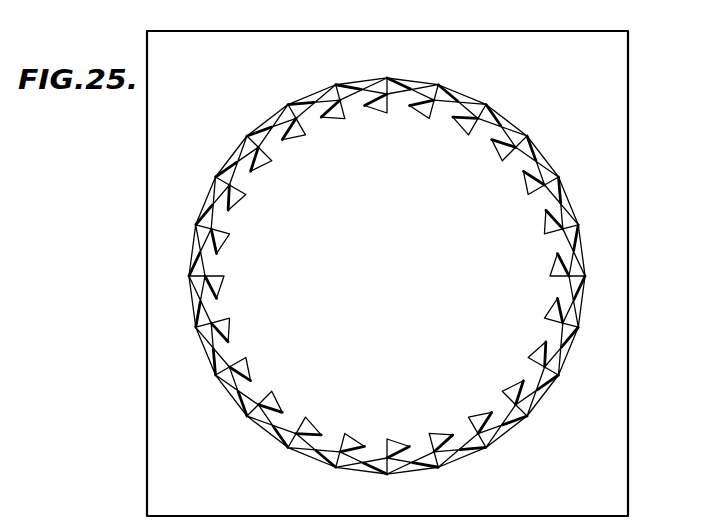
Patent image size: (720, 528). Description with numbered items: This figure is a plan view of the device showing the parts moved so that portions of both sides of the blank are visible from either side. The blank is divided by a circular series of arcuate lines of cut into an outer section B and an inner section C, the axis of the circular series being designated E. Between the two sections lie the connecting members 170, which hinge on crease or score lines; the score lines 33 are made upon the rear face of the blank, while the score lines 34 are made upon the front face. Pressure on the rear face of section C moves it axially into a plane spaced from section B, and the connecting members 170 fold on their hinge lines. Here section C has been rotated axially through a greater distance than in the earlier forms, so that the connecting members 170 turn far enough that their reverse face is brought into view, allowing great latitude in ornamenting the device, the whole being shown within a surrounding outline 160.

The frame 160 is at (609, 113).
The connecting members 170 is at (390, 275).
The crease or score lines 33 is at (202, 270).
The crease or score lines 34 is at (220, 322).
The section B is at (609, 260).
The axis E is at (386, 278).
The section C is at (459, 298).